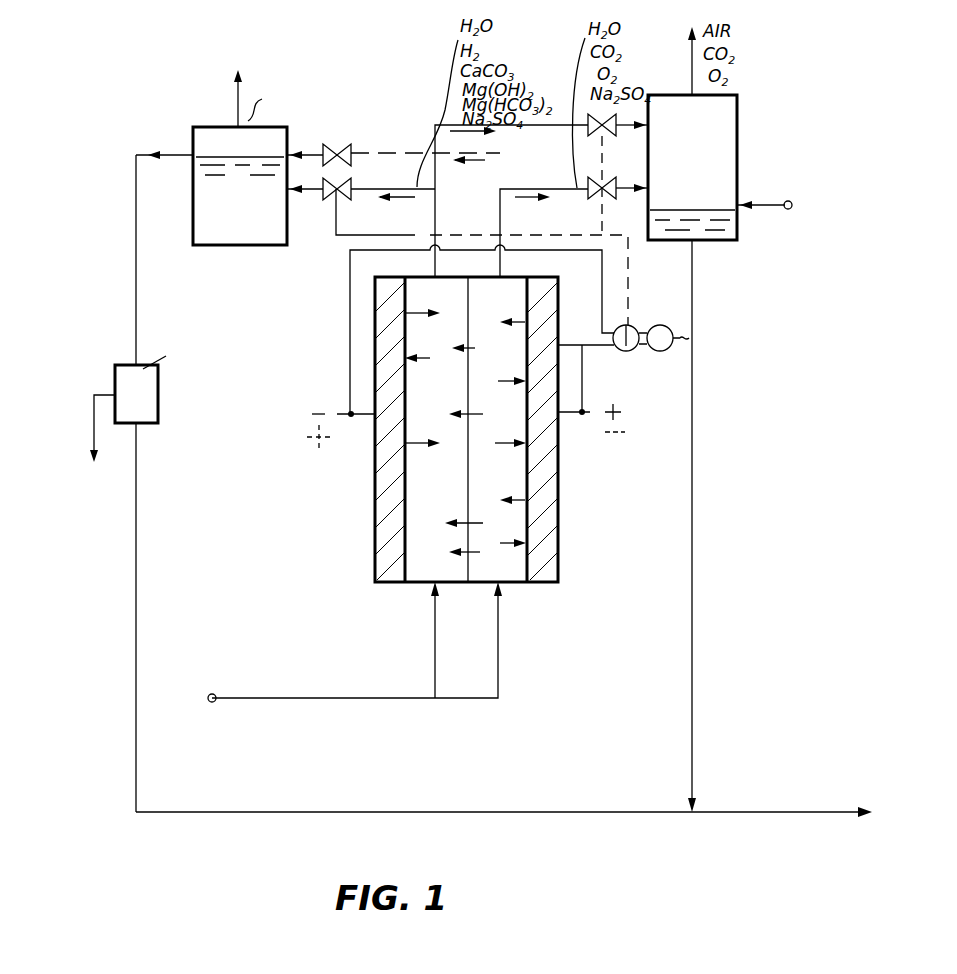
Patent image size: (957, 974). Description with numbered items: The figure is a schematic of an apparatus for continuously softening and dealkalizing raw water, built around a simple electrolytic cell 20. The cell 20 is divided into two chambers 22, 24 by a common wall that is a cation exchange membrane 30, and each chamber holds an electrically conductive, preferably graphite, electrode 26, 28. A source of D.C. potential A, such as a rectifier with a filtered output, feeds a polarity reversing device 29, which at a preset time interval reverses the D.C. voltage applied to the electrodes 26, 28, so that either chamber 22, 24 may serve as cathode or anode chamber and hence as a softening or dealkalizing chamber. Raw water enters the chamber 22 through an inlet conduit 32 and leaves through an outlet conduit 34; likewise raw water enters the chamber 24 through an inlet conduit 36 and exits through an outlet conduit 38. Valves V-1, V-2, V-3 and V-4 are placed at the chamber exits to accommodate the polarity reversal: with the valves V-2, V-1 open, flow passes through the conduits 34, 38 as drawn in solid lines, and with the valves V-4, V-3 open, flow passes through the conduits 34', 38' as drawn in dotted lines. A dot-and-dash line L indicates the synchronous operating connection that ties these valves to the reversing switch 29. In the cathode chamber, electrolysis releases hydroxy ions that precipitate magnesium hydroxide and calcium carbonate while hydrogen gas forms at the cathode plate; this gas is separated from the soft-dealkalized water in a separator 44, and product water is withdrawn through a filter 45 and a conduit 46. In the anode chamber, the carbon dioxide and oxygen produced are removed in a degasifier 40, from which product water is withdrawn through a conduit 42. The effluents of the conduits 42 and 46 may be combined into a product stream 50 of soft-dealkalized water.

The electrolytic cell 20 is at (562, 302).
The chamber 22 is at (420, 488).
The chamber 24 is at (522, 523).
The electrode 26 is at (374, 290).
The electrode 28 is at (552, 347).
The polarity reversing device 29 is at (622, 352).
The cation exchange membrane 30 is at (468, 291).
The inlet conduit 32 is at (435, 645).
The outlet conduit 34 is at (361, 210).
The conduit 34' is at (393, 139).
The inlet conduit 36 is at (498, 645).
The outlet conduit 38 is at (539, 254).
The conduit 38' is at (541, 199).
The degasifier 40 is at (737, 152).
The conduit 42 is at (692, 432).
The separator 44 is at (248, 236).
The filter 45 is at (148, 418).
The conduit 46 is at (136, 586).
The product stream 50 is at (755, 812).
The valve V-1 is at (606, 199).
The valve V-2 is at (328, 202).
The valve V-3 is at (606, 136).
The valve V-4 is at (341, 136).
The dot-and-dash line L is at (628, 268).
The source of D.C. potential A is at (658, 352).